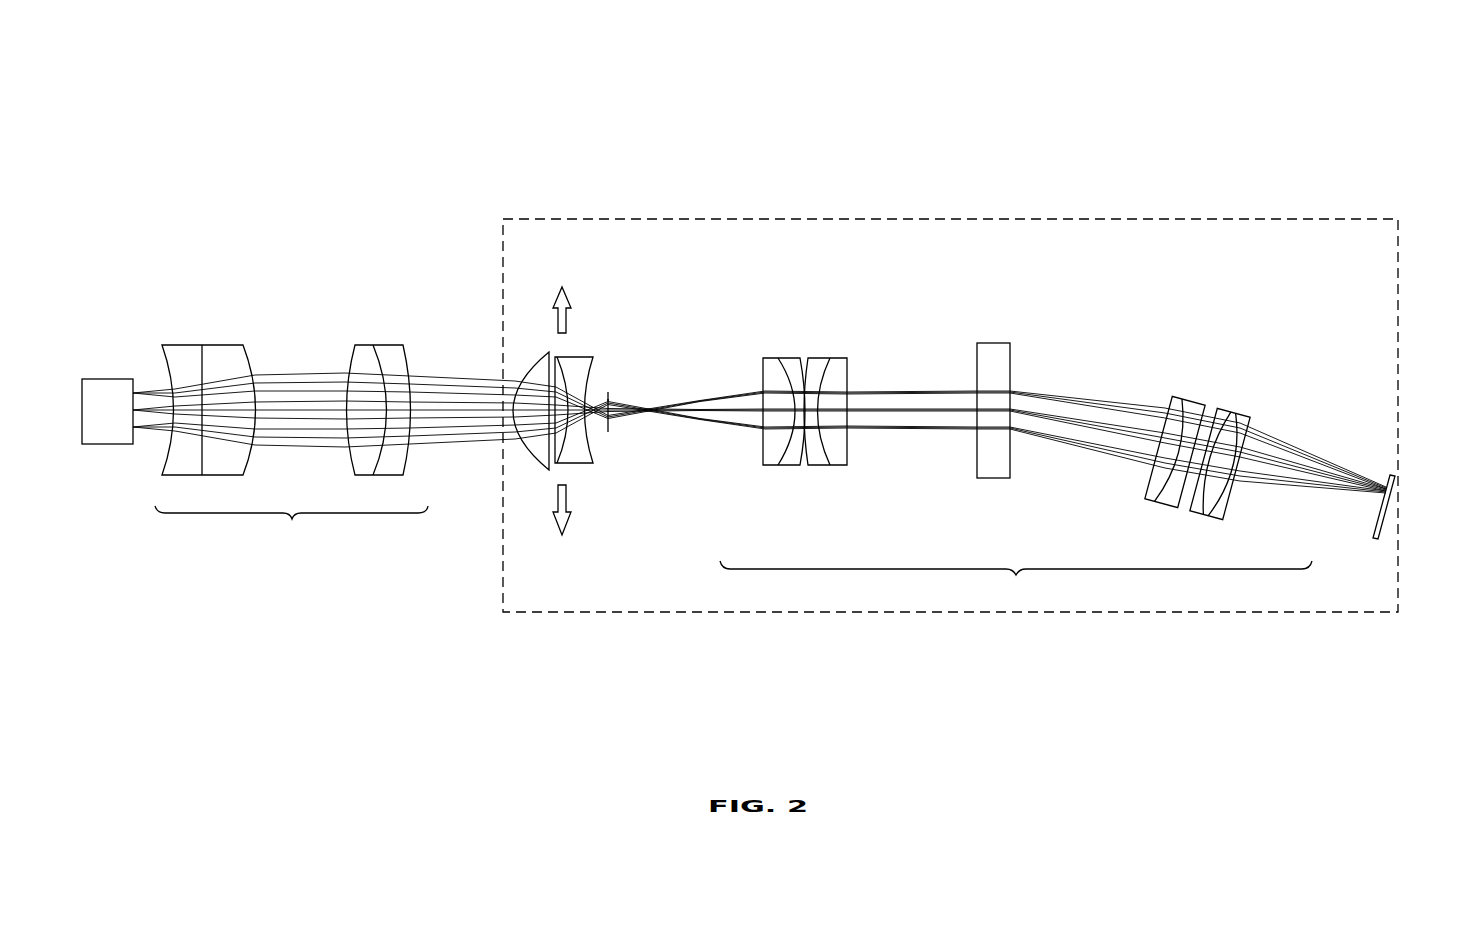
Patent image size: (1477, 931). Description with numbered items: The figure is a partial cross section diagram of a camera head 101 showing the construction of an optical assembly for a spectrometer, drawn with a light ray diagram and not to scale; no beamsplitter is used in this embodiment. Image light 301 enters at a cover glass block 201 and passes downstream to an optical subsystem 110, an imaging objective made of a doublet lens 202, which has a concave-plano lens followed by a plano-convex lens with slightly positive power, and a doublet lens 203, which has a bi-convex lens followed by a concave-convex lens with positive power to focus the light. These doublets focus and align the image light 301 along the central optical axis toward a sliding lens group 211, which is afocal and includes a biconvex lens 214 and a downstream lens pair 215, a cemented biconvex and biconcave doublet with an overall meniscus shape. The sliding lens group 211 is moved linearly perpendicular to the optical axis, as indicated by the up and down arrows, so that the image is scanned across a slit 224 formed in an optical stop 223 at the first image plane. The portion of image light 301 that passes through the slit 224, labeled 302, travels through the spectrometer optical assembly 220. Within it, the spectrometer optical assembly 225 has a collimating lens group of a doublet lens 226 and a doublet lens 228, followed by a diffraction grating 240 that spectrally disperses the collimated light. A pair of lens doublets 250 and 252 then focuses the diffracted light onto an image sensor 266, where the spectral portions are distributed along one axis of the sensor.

The camera head 101 is at (324, 106).
The optical subsystem 110 is at (291, 525).
The cover glass block 201 is at (128, 378).
The doublet lens 202 is at (202, 345).
The doublet lens 203 is at (376, 345).
The sliding lens group 211 is at (543, 290).
The biconvex lens 214 is at (547, 351).
The lens pair 215 is at (574, 345).
The spectrometer optical assembly 220 is at (911, 205).
The optical stop 223 is at (610, 393).
The slit 224 is at (611, 409).
The spectrometer optical assembly 225 is at (1016, 581).
The doublet lens 226 is at (789, 338).
The doublet lens 228 is at (842, 338).
The diffraction grating 240 is at (1010, 344).
The lens doublet 250 is at (1193, 362).
The lens doublet 252 is at (1244, 390).
The image sensor 266 is at (1394, 512).
The image light 301 is at (291, 370).
The portion of image light 302 is at (710, 389).